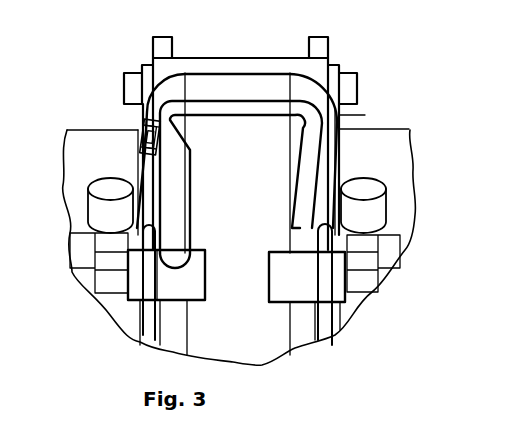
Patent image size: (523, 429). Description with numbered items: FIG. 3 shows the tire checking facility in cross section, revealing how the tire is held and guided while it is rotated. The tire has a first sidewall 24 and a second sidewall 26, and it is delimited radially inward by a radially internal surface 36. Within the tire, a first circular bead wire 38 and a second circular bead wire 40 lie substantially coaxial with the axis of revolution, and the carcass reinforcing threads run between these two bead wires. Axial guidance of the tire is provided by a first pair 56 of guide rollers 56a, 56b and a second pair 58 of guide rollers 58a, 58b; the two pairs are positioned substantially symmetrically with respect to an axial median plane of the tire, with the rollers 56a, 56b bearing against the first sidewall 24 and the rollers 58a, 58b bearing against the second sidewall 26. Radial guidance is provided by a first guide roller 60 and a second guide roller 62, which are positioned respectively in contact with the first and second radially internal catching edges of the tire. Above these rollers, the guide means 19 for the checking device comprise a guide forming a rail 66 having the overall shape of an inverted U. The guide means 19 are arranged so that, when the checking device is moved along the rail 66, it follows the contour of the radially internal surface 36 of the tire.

The means for guiding the device 19 is at (252, 125).
The first sidewall 24 is at (138, 115).
The second sidewall 26 is at (365, 115).
The radially internal surface 36 is at (212, 60).
The first circular bead wire 38 is at (150, 315).
The second circular bead wire 40 is at (325, 332).
The first pair of guide rollers 56 is at (74, 195).
The guide roller 56a is at (97, 213).
The guide roller 56b is at (110, 180).
The second pair of guide rollers 58 is at (391, 190).
The guide roller 58a is at (370, 217).
The guide roller 58b is at (377, 178).
The first guide roller 60 is at (187, 277).
The second guide roller 62 is at (287, 274).
The rail 66 is at (190, 110).